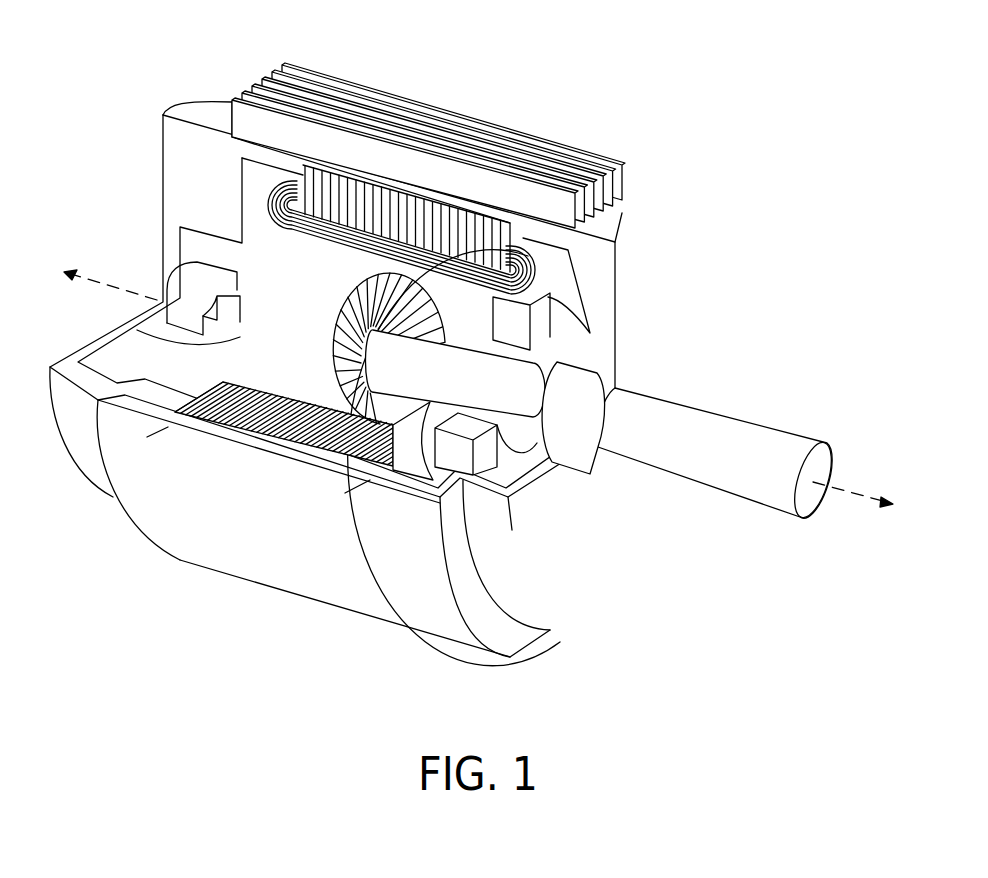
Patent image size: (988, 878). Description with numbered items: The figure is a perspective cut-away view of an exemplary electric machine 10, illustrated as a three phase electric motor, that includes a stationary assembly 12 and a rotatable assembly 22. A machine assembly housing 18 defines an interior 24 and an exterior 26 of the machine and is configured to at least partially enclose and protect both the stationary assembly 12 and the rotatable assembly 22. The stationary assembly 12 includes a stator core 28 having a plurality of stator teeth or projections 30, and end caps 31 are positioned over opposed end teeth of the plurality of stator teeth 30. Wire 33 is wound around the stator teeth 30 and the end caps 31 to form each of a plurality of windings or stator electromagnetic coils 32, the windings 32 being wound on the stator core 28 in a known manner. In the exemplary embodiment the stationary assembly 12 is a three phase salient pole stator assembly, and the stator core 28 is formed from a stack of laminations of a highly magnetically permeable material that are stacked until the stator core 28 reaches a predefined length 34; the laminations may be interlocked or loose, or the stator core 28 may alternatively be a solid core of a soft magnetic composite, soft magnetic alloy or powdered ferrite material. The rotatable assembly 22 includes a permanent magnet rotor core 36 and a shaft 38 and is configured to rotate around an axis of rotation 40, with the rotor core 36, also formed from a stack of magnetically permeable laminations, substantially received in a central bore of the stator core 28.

The electric machine 10 is at (702, 143).
The stationary assembly 12 is at (358, 220).
The machine assembly housing 18 is at (585, 150).
The rotatable assembly 22 is at (273, 379).
The interior 24 is at (220, 203).
The exterior 26 is at (193, 100).
The stator core 28 is at (403, 220).
The stator teeth 30 is at (520, 237).
The end caps 31 is at (298, 187).
The stator electromagnetic coils 32 is at (427, 267).
The wire 33 is at (272, 190).
The predefined length 34 is at (123, 518).
The permanent magnet rotor core 36 is at (350, 398).
The shaft 38 is at (808, 437).
The axis of rotation 40 is at (857, 497).